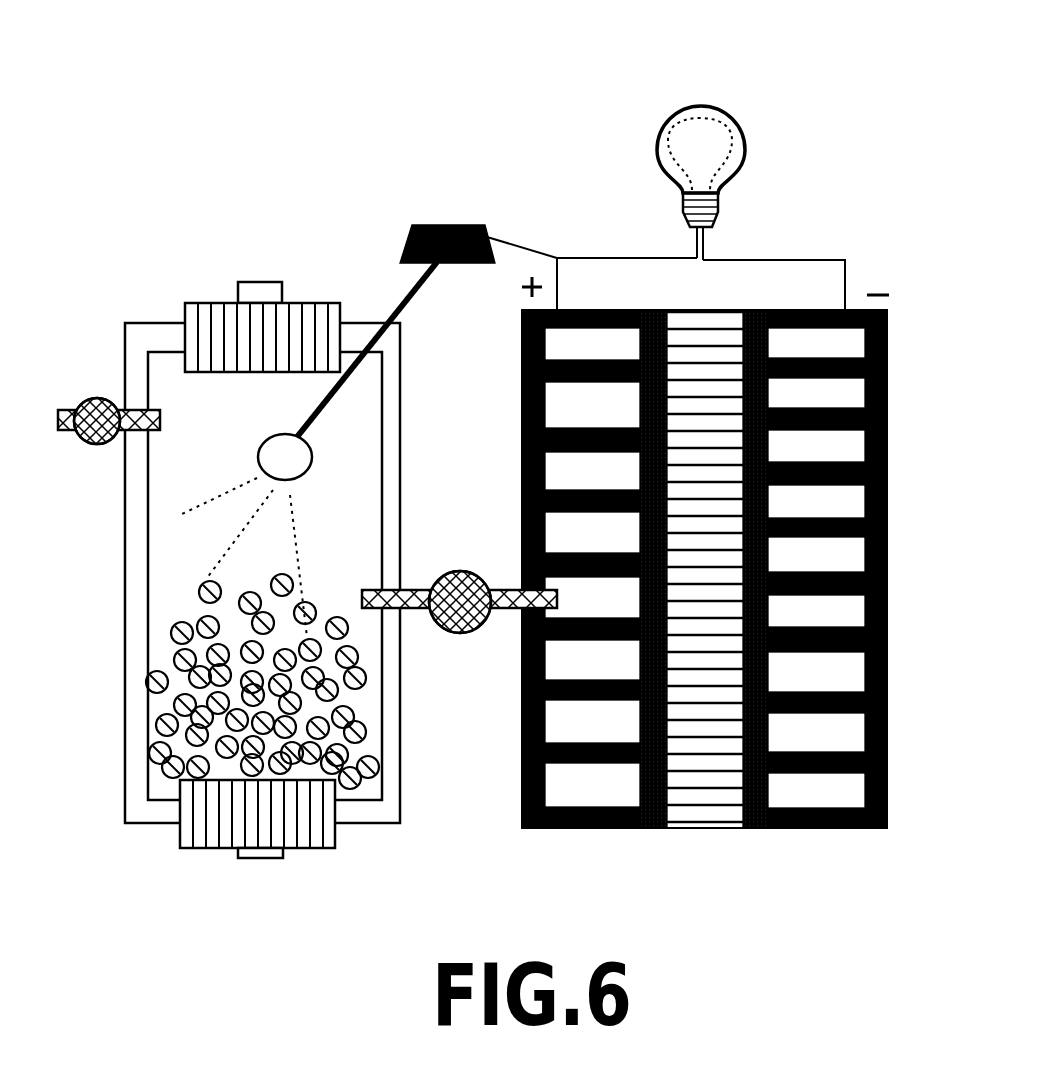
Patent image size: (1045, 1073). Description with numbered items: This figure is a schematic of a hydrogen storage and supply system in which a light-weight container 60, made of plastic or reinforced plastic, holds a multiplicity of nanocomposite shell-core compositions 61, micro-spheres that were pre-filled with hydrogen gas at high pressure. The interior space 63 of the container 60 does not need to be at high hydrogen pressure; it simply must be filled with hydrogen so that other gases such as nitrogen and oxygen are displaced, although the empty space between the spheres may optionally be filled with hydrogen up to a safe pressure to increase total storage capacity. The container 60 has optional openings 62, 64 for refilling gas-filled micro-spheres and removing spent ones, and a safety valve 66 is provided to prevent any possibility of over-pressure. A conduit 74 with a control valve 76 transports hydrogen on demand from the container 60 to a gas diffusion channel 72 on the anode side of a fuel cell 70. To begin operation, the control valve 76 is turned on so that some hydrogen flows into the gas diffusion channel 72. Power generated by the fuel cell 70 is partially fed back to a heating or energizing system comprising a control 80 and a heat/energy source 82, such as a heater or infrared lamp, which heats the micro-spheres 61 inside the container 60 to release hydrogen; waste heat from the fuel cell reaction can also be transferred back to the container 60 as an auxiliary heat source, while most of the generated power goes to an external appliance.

The container 60 is at (266, 497).
The nanocomposite shell-core compositions 61 is at (177, 655).
The opening 62 is at (292, 312).
The interior space 63 is at (175, 603).
The opening 64 is at (220, 850).
The safety valve 66 is at (93, 403).
The fuel cell 70 is at (650, 425).
The gas diffusion channel 72 is at (580, 607).
The conduit 74 is at (512, 590).
The control valve 76 is at (452, 572).
The control 80 is at (430, 222).
The heat/energy source 82 is at (313, 458).